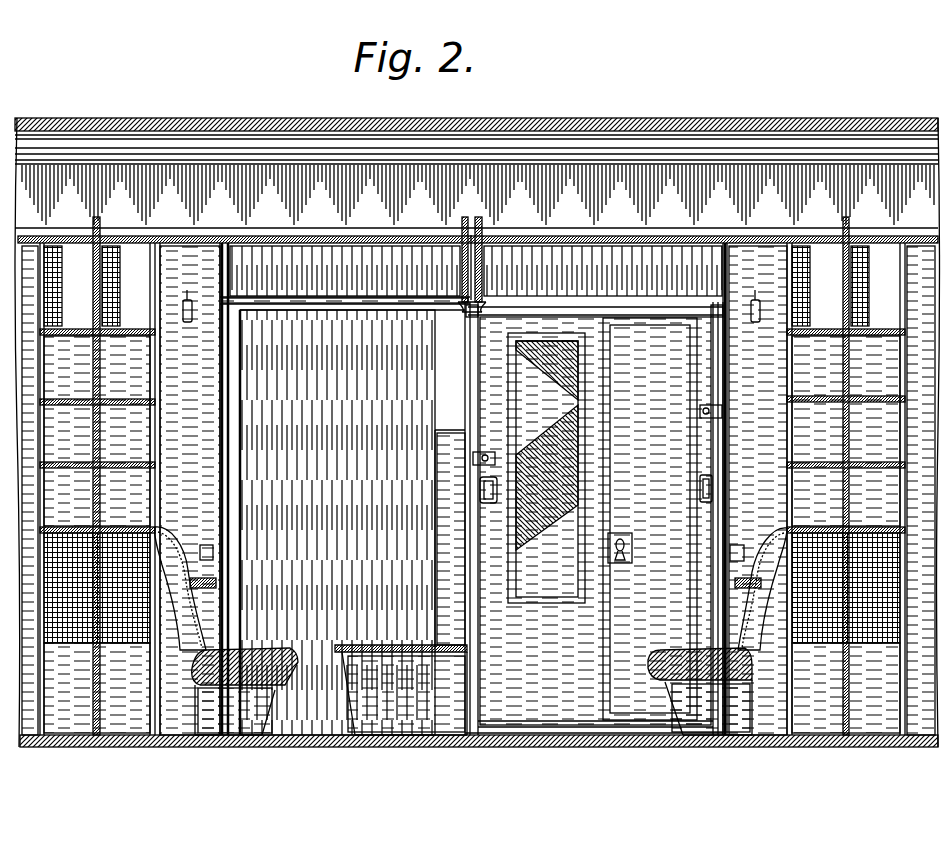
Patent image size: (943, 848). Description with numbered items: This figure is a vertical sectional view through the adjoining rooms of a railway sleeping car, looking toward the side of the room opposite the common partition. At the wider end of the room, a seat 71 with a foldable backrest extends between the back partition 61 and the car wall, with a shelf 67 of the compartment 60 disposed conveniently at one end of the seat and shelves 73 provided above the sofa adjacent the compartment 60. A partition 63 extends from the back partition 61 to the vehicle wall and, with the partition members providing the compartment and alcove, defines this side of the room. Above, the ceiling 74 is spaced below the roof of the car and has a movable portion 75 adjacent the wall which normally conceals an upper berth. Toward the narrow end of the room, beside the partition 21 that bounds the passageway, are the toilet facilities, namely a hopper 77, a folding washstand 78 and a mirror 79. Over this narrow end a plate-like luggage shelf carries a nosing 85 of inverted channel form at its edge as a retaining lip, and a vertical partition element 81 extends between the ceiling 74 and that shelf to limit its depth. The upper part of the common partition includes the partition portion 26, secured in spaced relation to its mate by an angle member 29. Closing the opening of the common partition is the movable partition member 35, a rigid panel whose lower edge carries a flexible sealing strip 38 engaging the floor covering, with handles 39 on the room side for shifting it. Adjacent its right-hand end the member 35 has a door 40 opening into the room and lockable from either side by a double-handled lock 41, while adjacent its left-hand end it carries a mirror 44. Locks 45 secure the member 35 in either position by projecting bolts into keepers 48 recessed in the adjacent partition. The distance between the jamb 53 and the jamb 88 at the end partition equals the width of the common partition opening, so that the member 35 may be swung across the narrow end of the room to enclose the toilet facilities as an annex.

The partition 21 is at (305, 453).
The partition portion 26 is at (484, 262).
The angle member 29 is at (460, 255).
The movable partition member 35 is at (556, 663).
The flexible sealing strip 38 is at (520, 727).
The handles 39 is at (497, 490).
The door 40 is at (630, 483).
The double-handled lock 41 is at (625, 534).
The mirror 44 is at (562, 393).
The locks 45 is at (513, 448).
The keeper 48 is at (470, 453).
The jamb 53 is at (465, 537).
The compartment 60 is at (223, 381).
The back partition 61 is at (742, 266).
The partition 63 is at (109, 380).
The shelf 67 is at (205, 585).
The seat 71 is at (264, 650).
The shelves 73 is at (135, 462).
The ceiling 74 is at (350, 244).
The movable portion 75 is at (458, 279).
The hopper 77 is at (390, 648).
The folding washstand 78 is at (432, 505).
The mirror 79 is at (465, 357).
The vertical partition element 81 is at (284, 274).
The nosing 85 is at (360, 298).
The jamb 88 is at (727, 363).